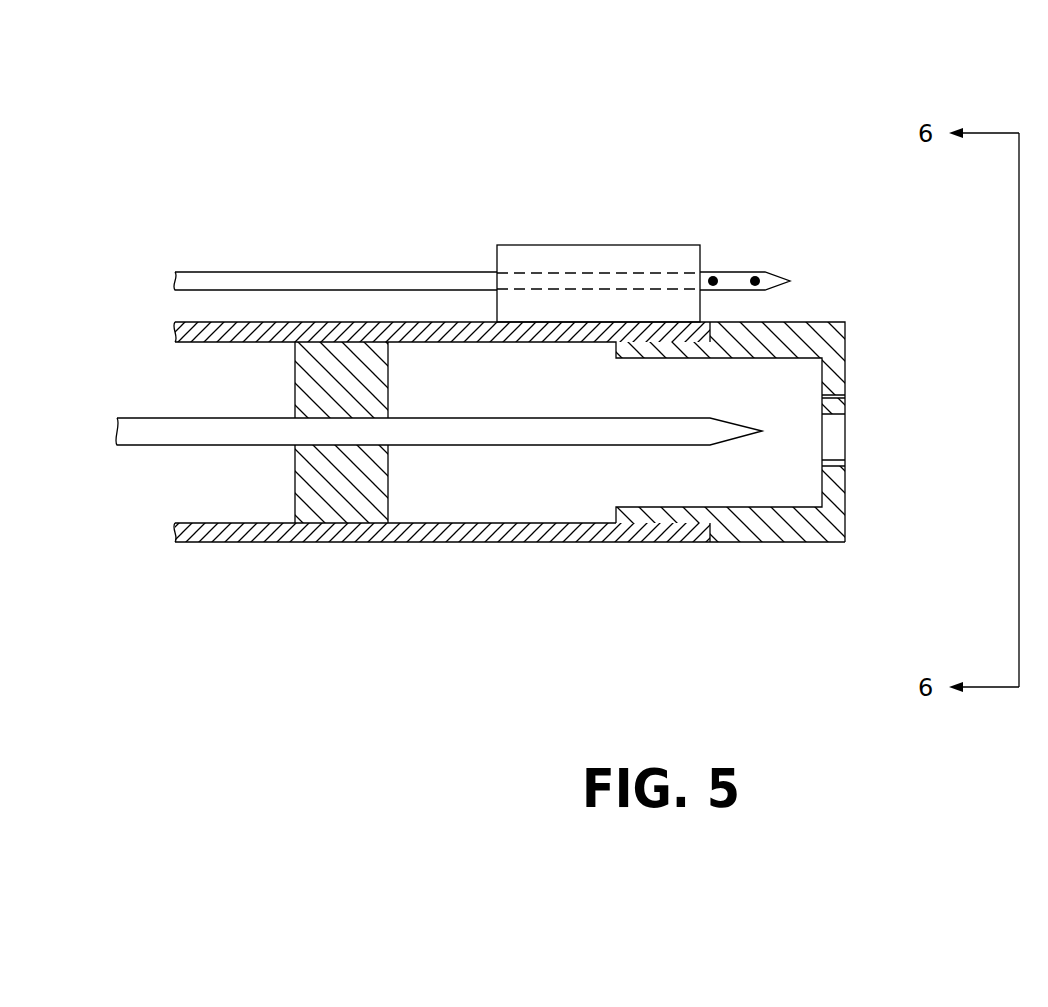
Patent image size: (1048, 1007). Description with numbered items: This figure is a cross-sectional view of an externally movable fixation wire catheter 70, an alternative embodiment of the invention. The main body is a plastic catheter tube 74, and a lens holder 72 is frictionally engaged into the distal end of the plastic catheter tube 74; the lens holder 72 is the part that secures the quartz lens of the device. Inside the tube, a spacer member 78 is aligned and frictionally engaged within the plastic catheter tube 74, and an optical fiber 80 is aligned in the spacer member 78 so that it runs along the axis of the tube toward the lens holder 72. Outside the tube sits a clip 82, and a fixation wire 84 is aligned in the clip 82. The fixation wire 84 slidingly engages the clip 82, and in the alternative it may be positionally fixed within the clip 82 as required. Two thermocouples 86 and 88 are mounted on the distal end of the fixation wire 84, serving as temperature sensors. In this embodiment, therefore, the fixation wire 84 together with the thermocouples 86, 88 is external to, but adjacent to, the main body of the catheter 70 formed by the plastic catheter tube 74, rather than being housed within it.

The externally movable fixation wire catheter 70 is at (745, 152).
The lens holder 72 is at (531, 446).
The plastic catheter tube 74 is at (505, 532).
The spacer member 78 is at (342, 358).
The optical fiber 80 is at (478, 435).
The clip 82 is at (608, 245).
The fixation wire 84 is at (392, 282).
The thermocouple 86 is at (713, 281).
The thermocouple 88 is at (755, 281).